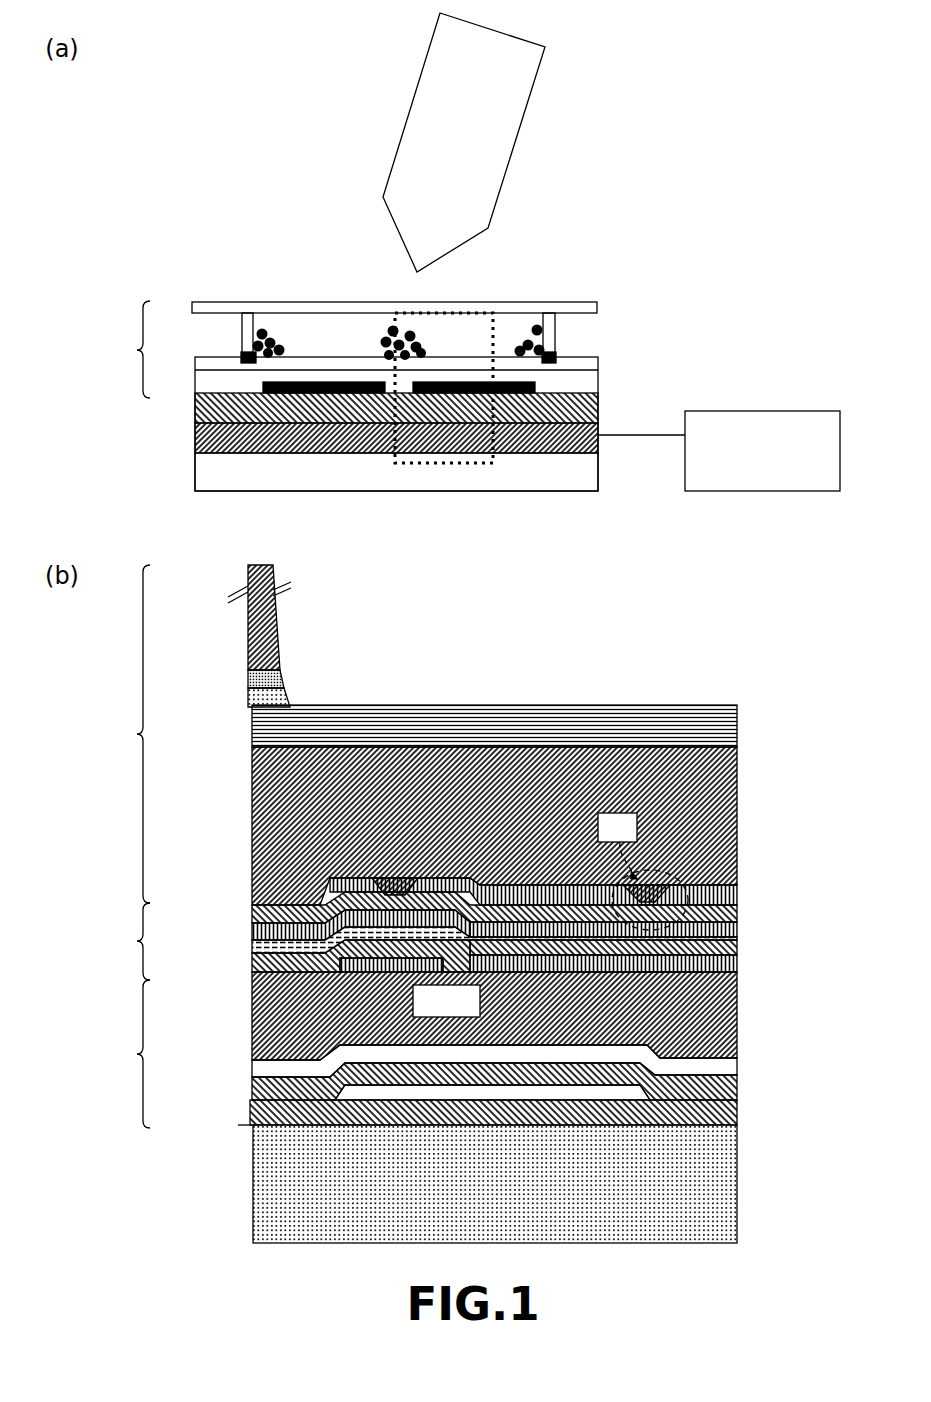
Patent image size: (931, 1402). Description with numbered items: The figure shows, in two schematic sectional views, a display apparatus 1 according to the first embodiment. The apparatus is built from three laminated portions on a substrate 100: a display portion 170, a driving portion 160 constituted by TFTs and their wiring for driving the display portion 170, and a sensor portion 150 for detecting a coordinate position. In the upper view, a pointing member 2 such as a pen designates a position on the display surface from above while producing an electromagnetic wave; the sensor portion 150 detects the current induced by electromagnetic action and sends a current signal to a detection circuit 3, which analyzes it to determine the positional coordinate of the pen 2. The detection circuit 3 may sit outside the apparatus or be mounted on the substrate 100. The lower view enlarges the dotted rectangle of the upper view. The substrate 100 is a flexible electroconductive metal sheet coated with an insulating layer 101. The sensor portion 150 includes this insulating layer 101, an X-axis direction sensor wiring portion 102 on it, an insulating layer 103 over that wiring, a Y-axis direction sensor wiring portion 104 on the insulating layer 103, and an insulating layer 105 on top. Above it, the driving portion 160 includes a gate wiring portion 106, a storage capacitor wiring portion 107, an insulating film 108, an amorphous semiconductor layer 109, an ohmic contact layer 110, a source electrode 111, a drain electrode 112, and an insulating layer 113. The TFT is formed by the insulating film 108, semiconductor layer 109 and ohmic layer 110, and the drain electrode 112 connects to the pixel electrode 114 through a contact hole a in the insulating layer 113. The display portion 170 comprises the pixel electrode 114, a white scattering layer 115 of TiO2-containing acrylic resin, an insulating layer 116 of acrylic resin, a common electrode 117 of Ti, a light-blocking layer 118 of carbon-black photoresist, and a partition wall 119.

The display apparatus 1 is at (146, 235).
The pointing member 2 is at (464, 142).
The detection circuit 3 is at (719, 451).
The contact hole a is at (643, 871).
The substrate 100 is at (195, 470).
The insulating layer 101 is at (737, 1118).
The X-axis direction sensor wiring portion 102 is at (577, 1094).
The insulating layer 103 is at (737, 1093).
The Y-axis direction sensor wiring portion 104 is at (737, 1068).
The insulating layer 105 is at (737, 1030).
The gate wiring portion 106 is at (413, 986).
The storage capacitor wiring portion 107 is at (737, 970).
The insulating film 108 is at (737, 960).
The amorphous semiconductor layer 109 is at (250, 950).
The ohmic contact layer 110 is at (737, 942).
The source electrode 111 is at (250, 932).
The drain electrode 112 is at (737, 927).
The insulating layer 113 is at (737, 910).
The pixel electrode 114 is at (737, 893).
The scattering layer 115 is at (737, 825).
The insulating layer 116 is at (737, 740).
The common electrode 117 is at (291, 698).
The light-blocking layer 118 is at (286, 678).
The partition wall 119 is at (277, 620).
The sensor portion 150 is at (195, 438).
The driving portion 160 is at (195, 408).
The display portion 170 is at (118, 602).